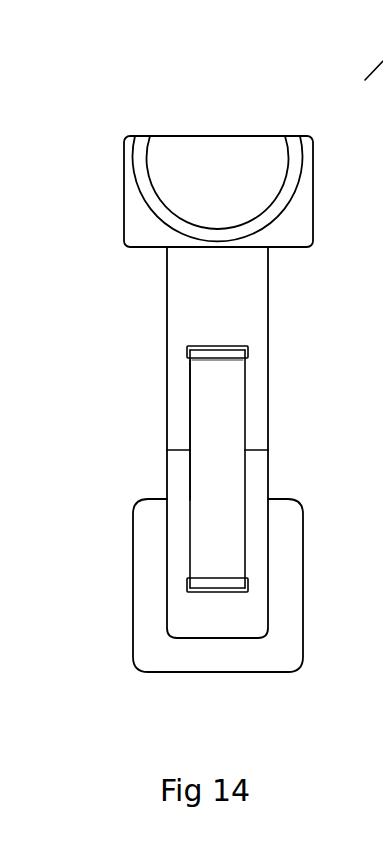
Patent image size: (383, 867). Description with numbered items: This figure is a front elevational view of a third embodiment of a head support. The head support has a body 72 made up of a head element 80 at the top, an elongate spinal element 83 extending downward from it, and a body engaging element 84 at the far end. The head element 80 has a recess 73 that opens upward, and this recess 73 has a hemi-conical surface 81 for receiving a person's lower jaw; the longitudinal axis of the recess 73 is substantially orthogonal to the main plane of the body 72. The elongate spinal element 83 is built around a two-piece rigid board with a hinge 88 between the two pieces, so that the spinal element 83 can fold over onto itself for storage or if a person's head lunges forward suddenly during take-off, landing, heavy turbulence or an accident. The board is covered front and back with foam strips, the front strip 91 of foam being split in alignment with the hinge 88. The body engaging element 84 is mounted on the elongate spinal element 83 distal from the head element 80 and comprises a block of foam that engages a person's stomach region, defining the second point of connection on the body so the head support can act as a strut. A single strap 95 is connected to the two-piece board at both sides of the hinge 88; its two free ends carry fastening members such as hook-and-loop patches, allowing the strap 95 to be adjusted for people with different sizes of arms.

The body 72 is at (253, 325).
The recess 73 is at (198, 158).
The head element 80 is at (302, 202).
The hemi-conical surface 81 is at (292, 152).
The elongate spinal element 83 is at (268, 405).
The body engaging element 84 is at (292, 635).
The hinge 88 is at (372, 478).
The front foam strip 91 is at (175, 387).
The single strap 95 is at (205, 477).